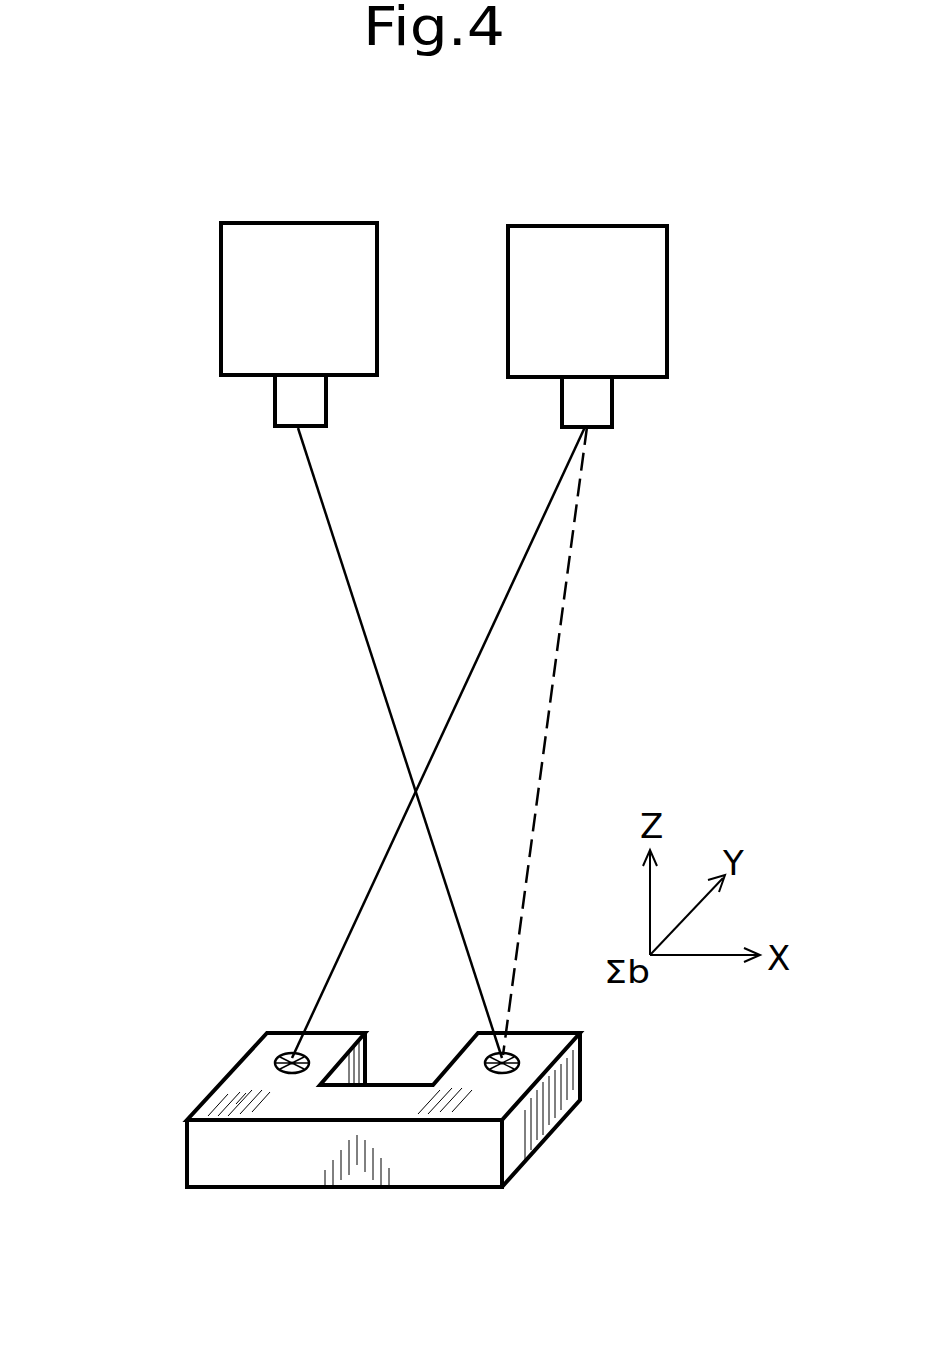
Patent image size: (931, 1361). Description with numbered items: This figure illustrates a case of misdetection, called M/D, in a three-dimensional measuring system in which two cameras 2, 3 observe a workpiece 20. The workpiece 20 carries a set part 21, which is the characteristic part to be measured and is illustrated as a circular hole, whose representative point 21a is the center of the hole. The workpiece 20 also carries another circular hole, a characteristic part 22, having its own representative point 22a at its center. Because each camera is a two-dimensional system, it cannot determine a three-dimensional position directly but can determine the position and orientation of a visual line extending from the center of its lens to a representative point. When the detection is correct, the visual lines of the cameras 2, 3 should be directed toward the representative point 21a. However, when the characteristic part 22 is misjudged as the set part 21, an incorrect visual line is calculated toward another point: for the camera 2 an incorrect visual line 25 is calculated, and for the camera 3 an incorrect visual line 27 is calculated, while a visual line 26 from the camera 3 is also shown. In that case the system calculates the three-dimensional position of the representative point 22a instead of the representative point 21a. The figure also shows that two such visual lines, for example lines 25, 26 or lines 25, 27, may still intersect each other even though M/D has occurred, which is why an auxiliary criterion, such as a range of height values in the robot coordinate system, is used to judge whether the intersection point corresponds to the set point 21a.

The camera 2 is at (335, 223).
The camera 3 is at (626, 226).
The workpiece 20 is at (166, 1192).
The set part 21 is at (278, 1062).
The characteristic part 22 is at (520, 1061).
The representative point 21a is at (293, 1074).
The representative point 22a is at (502, 1074).
The visual line 25 is at (347, 580).
The visual line 26 is at (522, 560).
The visual line 27 is at (571, 575).